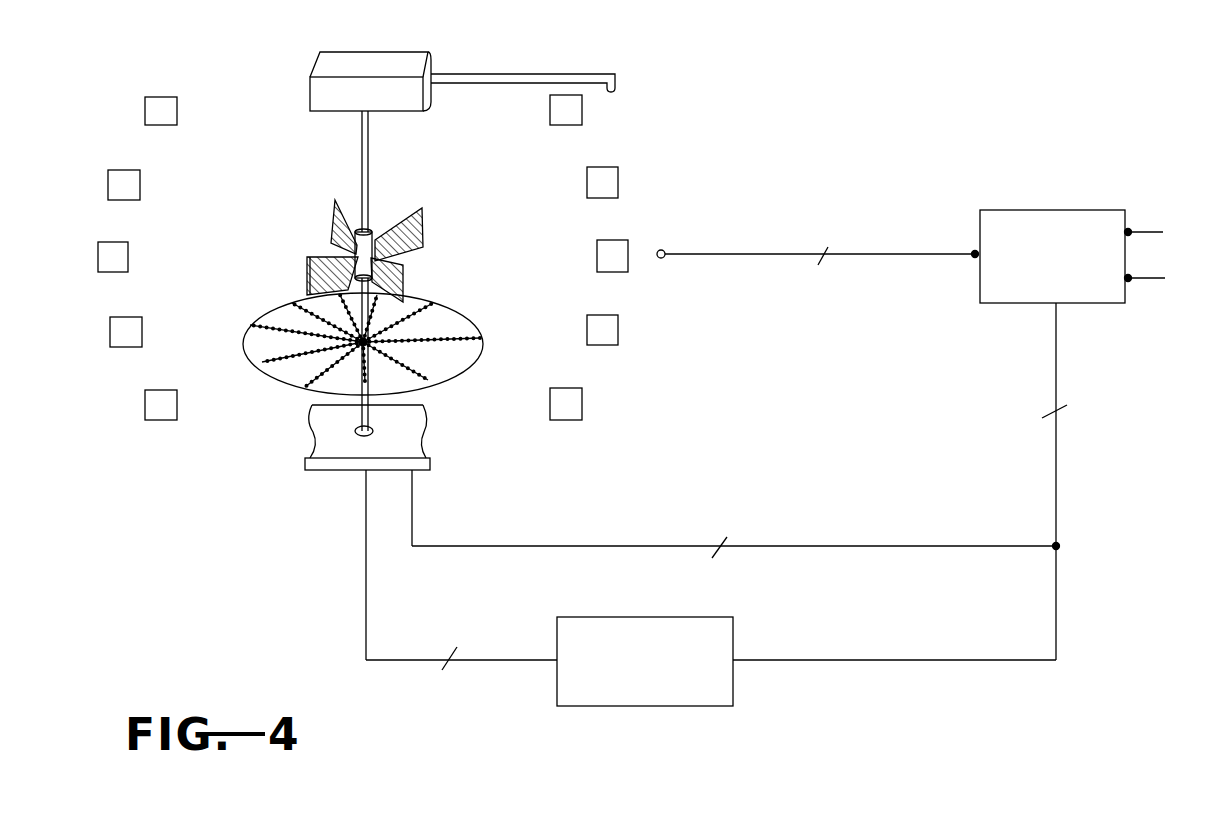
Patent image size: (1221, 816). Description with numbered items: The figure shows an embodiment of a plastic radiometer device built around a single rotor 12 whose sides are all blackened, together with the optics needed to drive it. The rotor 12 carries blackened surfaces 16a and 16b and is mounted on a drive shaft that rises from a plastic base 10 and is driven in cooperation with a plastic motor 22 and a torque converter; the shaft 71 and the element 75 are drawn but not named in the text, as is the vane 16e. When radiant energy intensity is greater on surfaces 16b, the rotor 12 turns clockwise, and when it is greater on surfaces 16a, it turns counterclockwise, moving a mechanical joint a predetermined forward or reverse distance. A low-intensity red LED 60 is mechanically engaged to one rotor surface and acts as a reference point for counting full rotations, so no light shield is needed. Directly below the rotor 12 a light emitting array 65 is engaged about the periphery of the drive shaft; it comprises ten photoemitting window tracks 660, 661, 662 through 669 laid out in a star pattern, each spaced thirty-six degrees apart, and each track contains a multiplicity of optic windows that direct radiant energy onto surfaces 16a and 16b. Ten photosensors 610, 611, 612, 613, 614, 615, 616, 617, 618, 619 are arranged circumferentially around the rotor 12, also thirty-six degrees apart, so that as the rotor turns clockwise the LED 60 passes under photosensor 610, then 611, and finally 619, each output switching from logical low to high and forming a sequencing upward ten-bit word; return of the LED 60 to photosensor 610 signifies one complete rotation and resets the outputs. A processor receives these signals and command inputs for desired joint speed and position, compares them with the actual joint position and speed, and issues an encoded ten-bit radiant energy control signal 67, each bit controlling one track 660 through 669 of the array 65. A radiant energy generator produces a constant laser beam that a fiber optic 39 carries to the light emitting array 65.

The shaft 71 is at (370, 138).
The plastic motor 22 is at (272, 170).
The LED 60 is at (421, 208).
The vane 16e is at (333, 205).
The rotor surface 16b is at (428, 215).
The rotor surface 16a is at (305, 266).
The rotor 12 is at (495, 262).
The light emitting array 65 is at (228, 322).
The photoemitting window track 660 is at (410, 385).
The photoemitting window track 661 is at (465, 358).
The photoemitting window track 662 is at (465, 318).
The photoemitting window track 669 is at (333, 382).
The center of disc 75 is at (300, 385).
The photosensor 610 is at (582, 108).
The photosensor 611 is at (618, 183).
The photosensor 612 is at (628, 258).
The photosensor 613 is at (618, 330).
The photosensor 614 is at (582, 404).
The photosensor 615 is at (145, 112).
The photosensor 616 is at (108, 182).
The photosensor 617 is at (98, 255).
The photosensor 618 is at (110, 330).
The photosensor 619 is at (145, 405).
The plastic base 10 is at (753, 458).
The radiant energy control signal 67 is at (1058, 544).
The fiber optic 39 is at (405, 661).